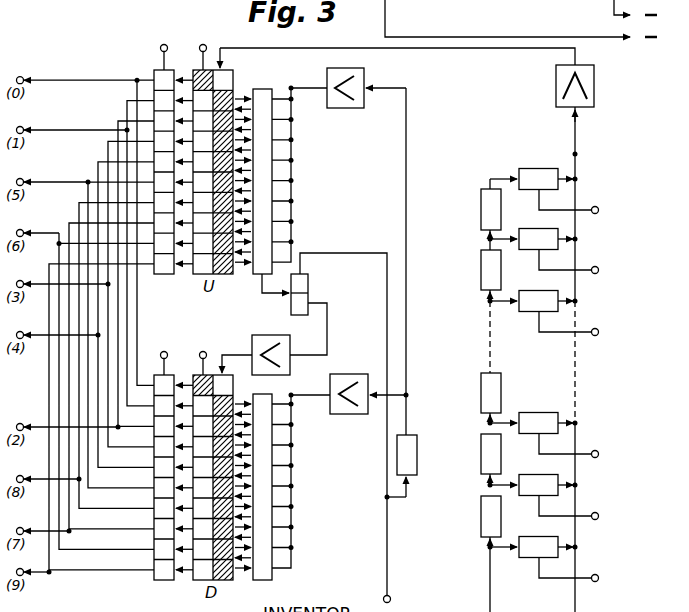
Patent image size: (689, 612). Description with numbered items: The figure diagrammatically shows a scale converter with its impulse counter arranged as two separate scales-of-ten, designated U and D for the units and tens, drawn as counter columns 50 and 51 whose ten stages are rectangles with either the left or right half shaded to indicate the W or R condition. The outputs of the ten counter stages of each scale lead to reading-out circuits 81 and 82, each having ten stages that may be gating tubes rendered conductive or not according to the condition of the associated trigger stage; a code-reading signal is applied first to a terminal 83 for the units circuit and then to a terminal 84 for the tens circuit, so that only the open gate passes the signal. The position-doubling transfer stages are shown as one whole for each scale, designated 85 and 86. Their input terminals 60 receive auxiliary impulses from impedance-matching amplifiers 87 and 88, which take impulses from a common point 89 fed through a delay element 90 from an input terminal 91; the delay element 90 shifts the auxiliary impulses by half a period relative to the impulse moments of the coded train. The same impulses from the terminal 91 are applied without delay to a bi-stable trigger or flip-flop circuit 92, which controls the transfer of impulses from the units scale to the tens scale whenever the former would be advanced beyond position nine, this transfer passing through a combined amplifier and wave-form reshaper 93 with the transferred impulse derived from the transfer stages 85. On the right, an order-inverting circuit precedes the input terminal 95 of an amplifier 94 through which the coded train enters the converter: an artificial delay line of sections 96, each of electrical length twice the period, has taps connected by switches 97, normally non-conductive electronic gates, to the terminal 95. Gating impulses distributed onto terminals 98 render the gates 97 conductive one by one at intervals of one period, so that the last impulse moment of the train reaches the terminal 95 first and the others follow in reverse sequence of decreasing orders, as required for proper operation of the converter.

The up-counter storage column 50 is at (204, 150).
The down-counter storage column 51 is at (204, 456).
The input terminals 60 is at (301, 318).
The reading-out circuit 81 is at (164, 181).
The reading-out circuit 82 is at (164, 487).
The terminal 83 is at (164, 48).
The terminal 84 is at (164, 354).
The position-doubling transfer stages 85 is at (274, 181).
The position-doubling transfer stages 86 is at (275, 487).
The impedance-matching amplifier 87 is at (345, 96).
The impedance-matching amplifier 88 is at (349, 404).
The common point 89 is at (398, 261).
The delay element 90 is at (414, 466).
The input terminal 91 is at (354, 432).
The bi-stable trigger or flip-flop circuit 92 is at (295, 314).
The combined amplifier and wave-form reshaper 93 is at (256, 345).
The amplifier 94 is at (564, 86).
The input terminal 95 is at (586, 359).
The delay line sections 96 is at (480, 395).
The switches 97 is at (534, 356).
The gating impulse terminals 98 is at (586, 393).